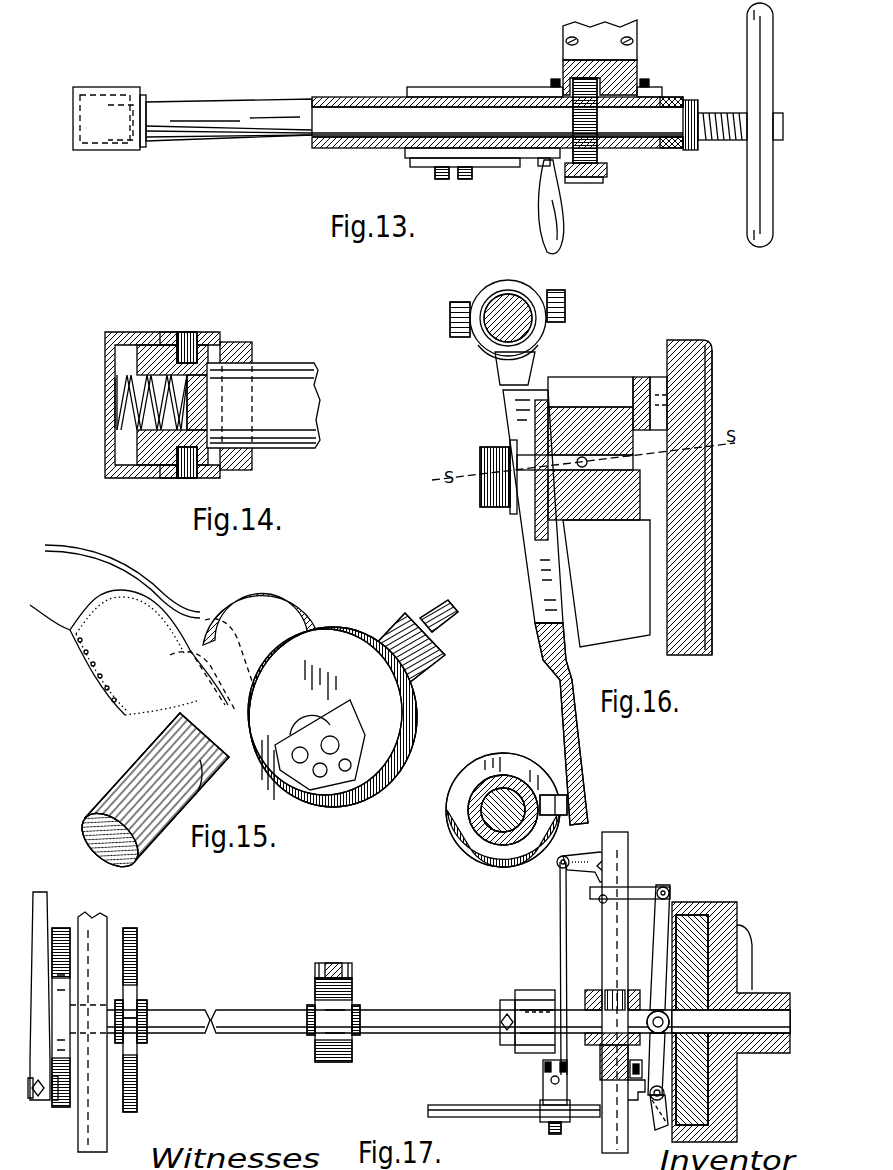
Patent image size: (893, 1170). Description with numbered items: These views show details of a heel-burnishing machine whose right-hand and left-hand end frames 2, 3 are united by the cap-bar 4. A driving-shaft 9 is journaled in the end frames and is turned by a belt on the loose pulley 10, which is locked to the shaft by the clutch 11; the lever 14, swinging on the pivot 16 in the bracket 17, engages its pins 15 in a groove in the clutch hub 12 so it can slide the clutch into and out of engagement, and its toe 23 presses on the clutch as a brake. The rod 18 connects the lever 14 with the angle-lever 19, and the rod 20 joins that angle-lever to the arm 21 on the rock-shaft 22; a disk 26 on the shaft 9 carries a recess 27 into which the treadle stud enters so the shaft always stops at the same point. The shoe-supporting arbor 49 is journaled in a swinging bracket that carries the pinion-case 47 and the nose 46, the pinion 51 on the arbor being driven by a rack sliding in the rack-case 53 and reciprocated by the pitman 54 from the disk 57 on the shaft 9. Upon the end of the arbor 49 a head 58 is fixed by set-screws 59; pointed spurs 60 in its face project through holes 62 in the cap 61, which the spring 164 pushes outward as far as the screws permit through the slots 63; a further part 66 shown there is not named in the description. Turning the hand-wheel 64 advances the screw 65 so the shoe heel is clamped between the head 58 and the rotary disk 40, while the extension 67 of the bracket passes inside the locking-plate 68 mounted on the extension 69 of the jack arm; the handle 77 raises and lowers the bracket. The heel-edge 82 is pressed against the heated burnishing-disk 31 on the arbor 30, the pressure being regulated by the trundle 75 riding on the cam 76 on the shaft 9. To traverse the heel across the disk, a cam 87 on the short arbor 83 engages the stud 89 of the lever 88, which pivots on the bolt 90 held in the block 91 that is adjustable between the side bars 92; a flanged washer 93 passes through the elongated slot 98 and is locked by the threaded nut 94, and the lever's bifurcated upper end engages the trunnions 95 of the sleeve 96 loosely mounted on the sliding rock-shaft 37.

In FIG. 17, the right-hand leg or end frame 2 is at (79, 1032).
In FIG. 17, the left-hand leg or end frame 3 is at (602, 1142).
In FIG. 16, the cap-bar 4 is at (696, 497).
In FIG. 17, the driving-shaft 9 is at (176, 1010).
In FIG. 17, the pulley 10 is at (731, 1022).
In FIG. 17, the clutch 11 is at (731, 1020).
In FIG. 17, the hub 12 is at (650, 1050).
In FIG. 17, the lever 14 is at (656, 935).
In FIG. 17, the pins 15 is at (658, 1024).
In FIG. 17, the pivot 16 is at (652, 1098).
In FIG. 17, the bracket 17 is at (635, 1093).
In FIG. 17, the rod 18 is at (640, 880).
In FIG. 17, the angle-lever 19 is at (591, 871).
In FIG. 17, the rod 20 is at (551, 965).
In FIG. 17, the arm 21 is at (576, 1083).
In FIG. 17, the rock-shaft 22 is at (485, 1117).
In FIG. 17, the toe 23 is at (662, 1122).
In FIG. 17, the disk 26 is at (138, 985).
In FIG. 17, the recess 27 is at (142, 1065).
In FIG. 15, the arbor 30 is at (422, 645).
In FIG. 15, the burnishing-disk 31 is at (332, 717).
In FIG. 16, the sliding rock-shaft 37 is at (490, 298).
In FIG. 15, the disk 40 is at (261, 604).
In FIG. 13, the nose or projection 46 is at (582, 183).
In FIG. 13, the pinion-case 47 is at (608, 172).
In FIG. 13, the shouldered arbor or arm 49 is at (422, 114).
In FIG. 14, the shouldered arbor or arm 49 is at (274, 405).
In FIG. 15, the shouldered arbor or arm 49 is at (150, 795).
In FIG. 13, the pinion 51 is at (597, 118).
In FIG. 13, the rack-case 53 is at (600, 57).
In FIG. 17, the pitman 54 is at (39, 984).
In FIG. 17, the disk 57 is at (56, 1100).
In FIG. 13, the head 58 is at (147, 144).
In FIG. 14, the head 58 is at (248, 399).
In FIG. 14, the set-screws 59 is at (190, 478).
In FIG. 14, the pointed spurs 60 is at (150, 455).
In FIG. 14, the cap 61 is at (110, 400).
In FIG. 13, the holes 62 is at (106, 111).
In FIG. 14, the holes 62 is at (108, 455).
In FIG. 14, the slots 63 is at (167, 478).
In FIG. 13, the hand-wheel 64 is at (770, 125).
In FIG. 13, the screw 65 is at (714, 113).
In FIG. 14, the block 66 is at (150, 350).
In FIG. 13, the extension 67 is at (540, 166).
In FIG. 13, the adjustable locking-plate 68 is at (495, 165).
In FIG. 13, the extension 69 is at (408, 151).
In FIG. 17, the roll or trundle 75 is at (336, 963).
In FIG. 17, the cam 76 is at (333, 1020).
In FIG. 13, the handle 77 is at (562, 207).
In FIG. 15, the heel-edge 82 is at (143, 630).
In FIG. 16, the short arbor 83 is at (503, 810).
In FIG. 16, the cam 87 is at (453, 806).
In FIG. 16, the lever 88 is at (553, 692).
In FIG. 16, the stud 89 is at (567, 815).
In FIG. 16, the bolt 90 is at (575, 462).
In FIG. 16, the block 91 is at (594, 513).
In FIG. 16, the side bars 92 is at (606, 583).
In FIG. 16, the flanged washer 93 is at (535, 452).
In FIG. 16, the threaded nut 94 is at (492, 507).
In FIG. 16, the trunnions 95 is at (574, 308).
In FIG. 16, the sleeve 96 is at (524, 290).
In FIG. 16, the elongated slot 98 is at (535, 575).
In FIG. 14, the spring 164 is at (113, 416).